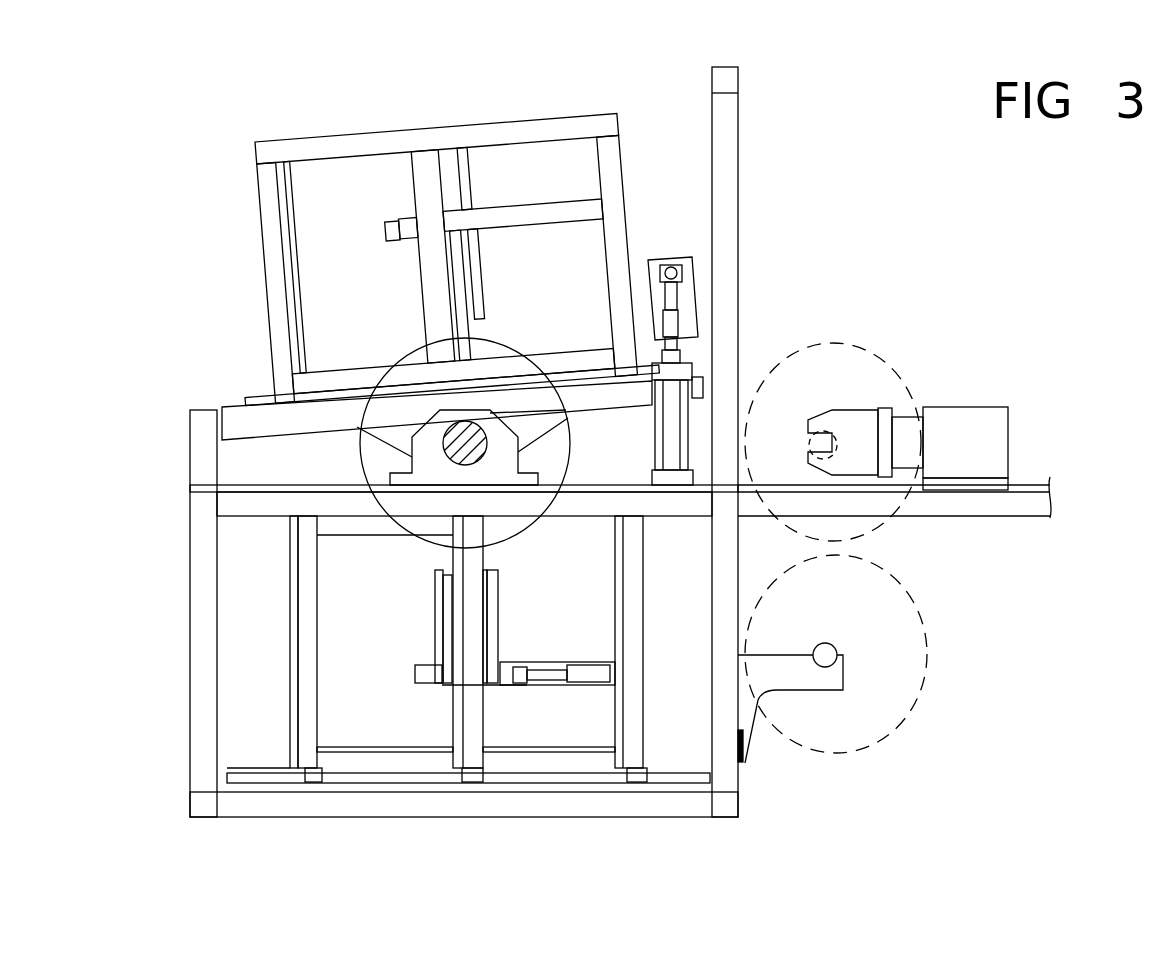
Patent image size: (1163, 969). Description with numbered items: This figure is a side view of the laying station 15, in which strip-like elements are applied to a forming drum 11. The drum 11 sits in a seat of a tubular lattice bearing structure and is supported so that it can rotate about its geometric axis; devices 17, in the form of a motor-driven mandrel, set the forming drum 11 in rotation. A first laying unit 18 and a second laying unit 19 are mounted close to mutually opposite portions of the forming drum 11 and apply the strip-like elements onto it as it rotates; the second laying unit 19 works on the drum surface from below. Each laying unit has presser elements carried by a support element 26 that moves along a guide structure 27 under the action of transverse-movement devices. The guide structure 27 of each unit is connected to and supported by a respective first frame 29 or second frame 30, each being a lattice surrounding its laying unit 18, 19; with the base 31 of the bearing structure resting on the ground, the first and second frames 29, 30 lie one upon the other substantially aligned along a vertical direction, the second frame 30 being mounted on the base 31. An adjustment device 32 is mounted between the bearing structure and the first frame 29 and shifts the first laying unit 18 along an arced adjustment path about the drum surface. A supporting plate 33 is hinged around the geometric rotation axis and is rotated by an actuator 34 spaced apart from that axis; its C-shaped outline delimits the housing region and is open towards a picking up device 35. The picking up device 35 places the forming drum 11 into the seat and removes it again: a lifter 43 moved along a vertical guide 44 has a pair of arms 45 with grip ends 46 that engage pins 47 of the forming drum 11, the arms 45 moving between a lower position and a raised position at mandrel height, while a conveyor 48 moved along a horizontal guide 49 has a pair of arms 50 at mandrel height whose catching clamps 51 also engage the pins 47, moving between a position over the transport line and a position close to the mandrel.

The forming drum 11 is at (368, 457).
The laying station 15 is at (190, 148).
The devices 17 is at (455, 455).
The first laying unit 18 is at (397, 265).
The second laying unit 19 is at (420, 622).
The support element 26 is at (483, 276).
The guide structure 27 is at (390, 227).
The first frame 29 is at (328, 133).
The second frame 30 is at (647, 687).
The base 31 is at (206, 764).
The adjustment device 32 is at (699, 297).
The supporting plate 33 is at (253, 417).
The actuator 34 is at (673, 433).
The picking up device 35 is at (935, 552).
The lifter 43 is at (790, 700).
The vertical guide 44 is at (743, 777).
The arms 45 is at (830, 692).
The grip ends 46 is at (843, 668).
The pins 47 is at (824, 437).
The conveyor 48 is at (952, 397).
The horizontal guide 49 is at (1000, 507).
The arms 50 is at (968, 442).
The catching clamps 51 is at (852, 420).